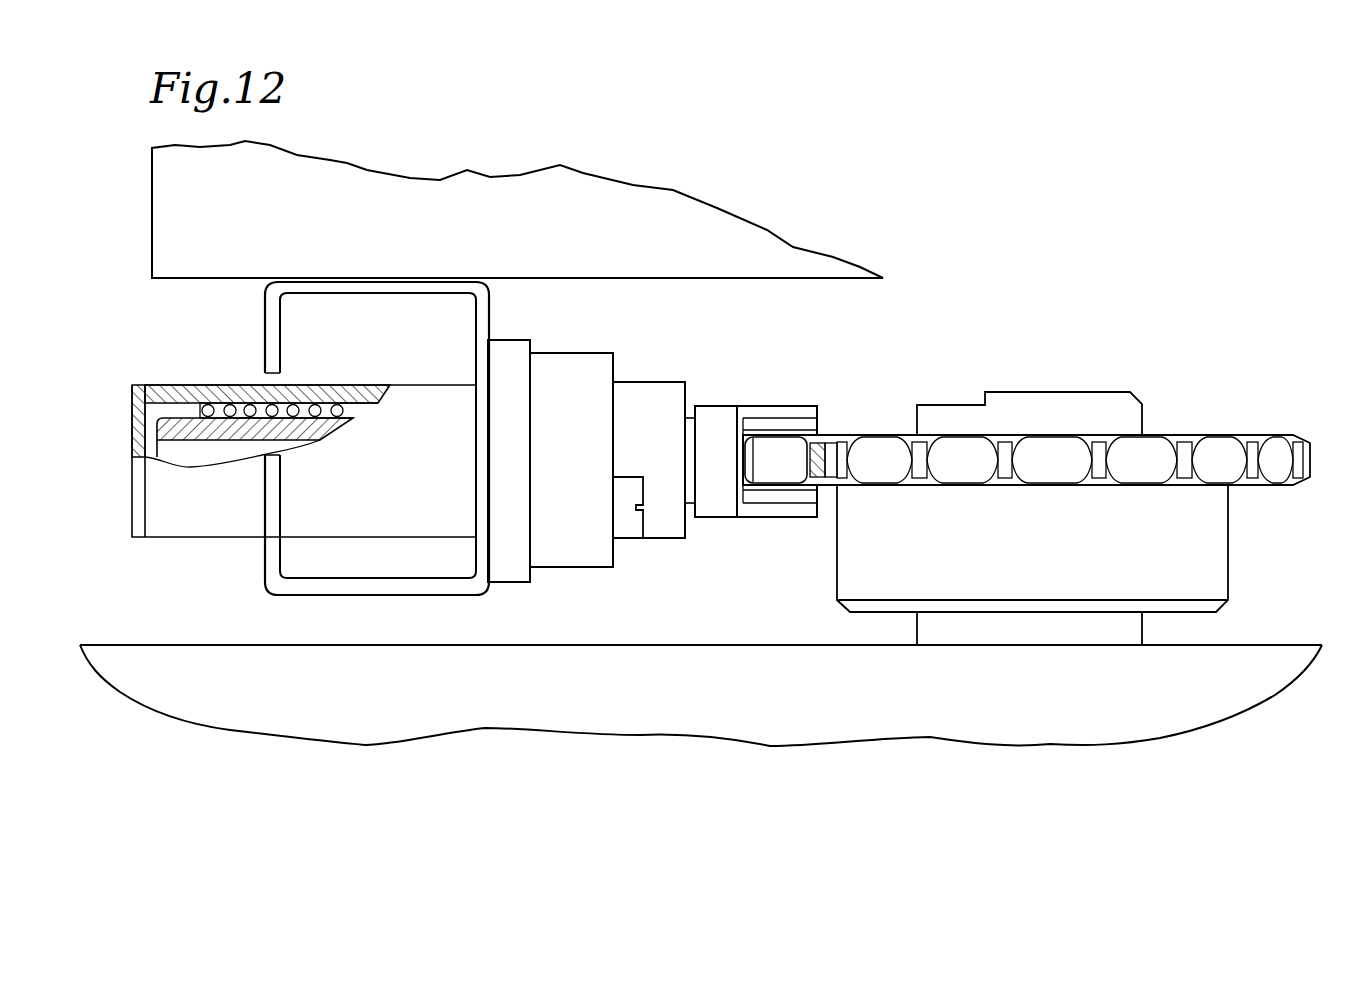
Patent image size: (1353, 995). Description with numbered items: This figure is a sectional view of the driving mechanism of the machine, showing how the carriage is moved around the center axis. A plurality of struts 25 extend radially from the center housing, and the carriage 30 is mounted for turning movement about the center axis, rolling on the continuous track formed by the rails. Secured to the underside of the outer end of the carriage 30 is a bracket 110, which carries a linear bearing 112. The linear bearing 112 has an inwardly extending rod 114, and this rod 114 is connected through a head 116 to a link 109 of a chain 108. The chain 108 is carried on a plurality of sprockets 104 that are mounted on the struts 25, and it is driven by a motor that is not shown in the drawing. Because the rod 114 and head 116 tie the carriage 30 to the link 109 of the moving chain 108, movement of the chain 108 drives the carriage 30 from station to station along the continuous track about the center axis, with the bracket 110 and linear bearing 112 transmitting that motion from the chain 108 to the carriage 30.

The strut 25 is at (1262, 652).
The carriage 30 is at (160, 242).
The sprocket 104 is at (1216, 447).
The chain 108 is at (772, 477).
The link 109 is at (820, 420).
The bracket 110 is at (483, 311).
The linear bearing 112 is at (228, 382).
The rod 114 is at (162, 429).
The head 116 is at (714, 406).